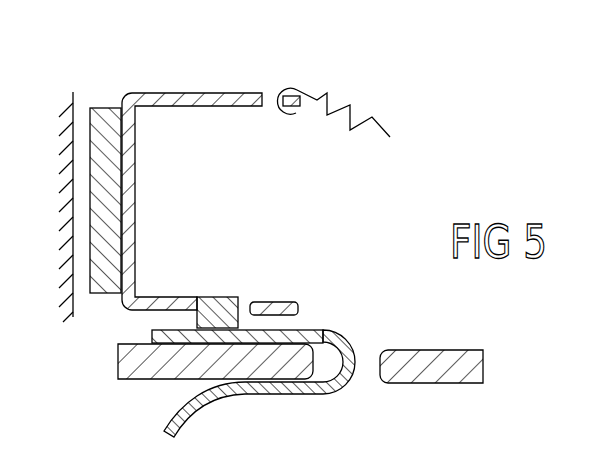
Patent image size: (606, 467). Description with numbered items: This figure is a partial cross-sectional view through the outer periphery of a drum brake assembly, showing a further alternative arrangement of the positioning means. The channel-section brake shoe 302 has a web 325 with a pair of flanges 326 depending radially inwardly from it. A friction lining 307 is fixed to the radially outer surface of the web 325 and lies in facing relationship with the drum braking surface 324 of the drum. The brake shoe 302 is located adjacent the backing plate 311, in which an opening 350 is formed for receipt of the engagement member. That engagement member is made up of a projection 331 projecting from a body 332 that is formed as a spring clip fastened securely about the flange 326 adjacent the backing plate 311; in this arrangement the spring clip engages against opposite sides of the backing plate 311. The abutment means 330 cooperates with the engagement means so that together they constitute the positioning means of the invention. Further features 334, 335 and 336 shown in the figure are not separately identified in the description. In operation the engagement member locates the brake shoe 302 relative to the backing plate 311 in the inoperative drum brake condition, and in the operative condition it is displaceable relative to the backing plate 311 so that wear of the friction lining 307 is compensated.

The brake shoe 302 is at (237, 66).
The friction lining 307 is at (88, 218).
The backing plate 311 is at (447, 365).
The drum braking surface 324 is at (74, 104).
The web 325 is at (136, 148).
The flange 326 is at (204, 92).
The abutment means 330 is at (236, 279).
The projection 331 is at (212, 297).
The body 332 is at (350, 348).
The retaining clip 334 is at (269, 307).
The contact strip 335 is at (198, 298).
The spring clip 336 is at (352, 120).
The opening 350 is at (378, 361).